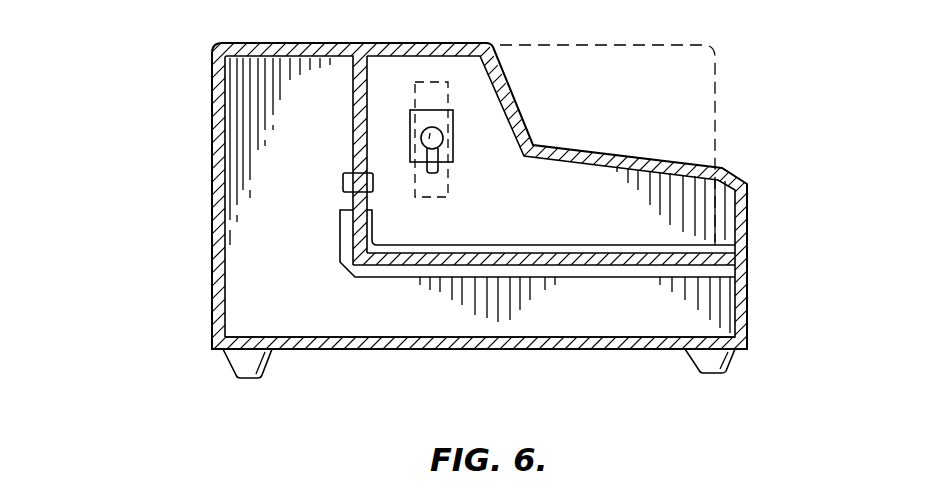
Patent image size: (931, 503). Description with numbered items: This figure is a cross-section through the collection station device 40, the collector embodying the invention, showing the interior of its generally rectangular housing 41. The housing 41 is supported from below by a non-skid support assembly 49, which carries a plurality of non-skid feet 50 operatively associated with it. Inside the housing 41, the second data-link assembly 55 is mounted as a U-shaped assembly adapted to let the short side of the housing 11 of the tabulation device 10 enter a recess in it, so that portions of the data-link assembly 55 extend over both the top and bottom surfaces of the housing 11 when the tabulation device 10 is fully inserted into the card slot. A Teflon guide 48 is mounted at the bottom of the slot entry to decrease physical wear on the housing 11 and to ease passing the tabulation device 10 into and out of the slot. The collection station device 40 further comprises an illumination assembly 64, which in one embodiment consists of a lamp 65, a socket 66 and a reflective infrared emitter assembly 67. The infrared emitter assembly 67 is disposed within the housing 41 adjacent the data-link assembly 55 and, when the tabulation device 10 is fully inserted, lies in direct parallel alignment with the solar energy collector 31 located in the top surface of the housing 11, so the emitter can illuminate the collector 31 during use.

The tabulation device 10 is at (735, 128).
The housing 11 is at (597, 45).
The solar energy collector 31 is at (433, 82).
The collection station device 40 is at (183, 240).
The housing 41 is at (465, 352).
The guide 48 is at (575, 246).
The non-skid support assembly 49 is at (530, 383).
The non-skid feet 50 is at (690, 356).
The second data-link assembly 55 is at (343, 183).
The illumination assembly 64 is at (397, 147).
The lamp 65 is at (444, 138).
The socket 66 is at (440, 165).
The reflective infrared emitter assembly 67 is at (455, 118).